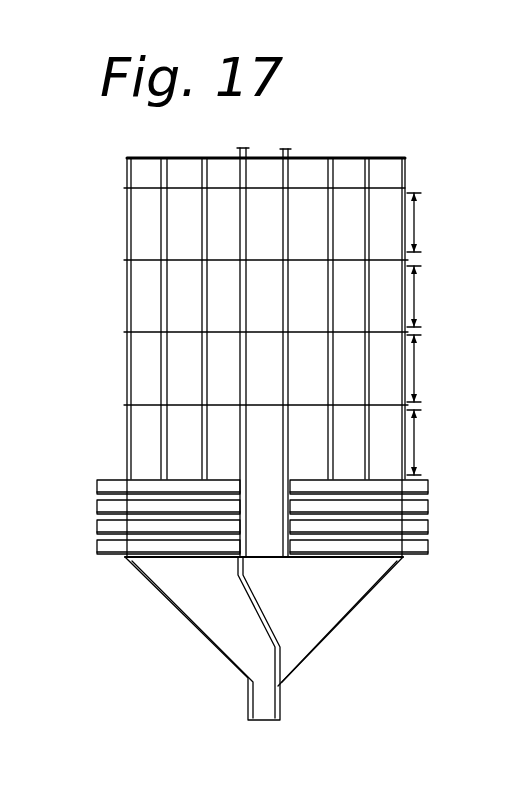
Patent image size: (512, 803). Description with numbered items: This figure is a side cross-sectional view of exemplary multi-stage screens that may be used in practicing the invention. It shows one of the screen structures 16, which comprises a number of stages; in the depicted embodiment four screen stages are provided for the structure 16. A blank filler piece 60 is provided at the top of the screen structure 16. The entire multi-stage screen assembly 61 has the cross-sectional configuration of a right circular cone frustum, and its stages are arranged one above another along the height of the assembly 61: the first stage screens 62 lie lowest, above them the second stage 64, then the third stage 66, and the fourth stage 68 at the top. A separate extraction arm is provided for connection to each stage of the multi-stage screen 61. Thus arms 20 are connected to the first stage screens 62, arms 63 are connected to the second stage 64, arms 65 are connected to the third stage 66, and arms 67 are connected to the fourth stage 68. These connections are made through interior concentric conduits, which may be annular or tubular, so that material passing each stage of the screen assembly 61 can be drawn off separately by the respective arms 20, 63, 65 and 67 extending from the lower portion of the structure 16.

The screen structure 16 is at (160, 440).
The extraction arm 20 is at (95, 484).
The blank filler piece 60 is at (189, 160).
The multi-stage screen assembly 61 is at (200, 322).
The first stage screen 62 is at (425, 442).
The extraction arm 63 is at (100, 509).
The second stage 64 is at (425, 368).
The extraction arm 65 is at (100, 528).
The third stage 66 is at (425, 296).
The extraction arm 67 is at (100, 553).
The fourth stage 68 is at (425, 222).